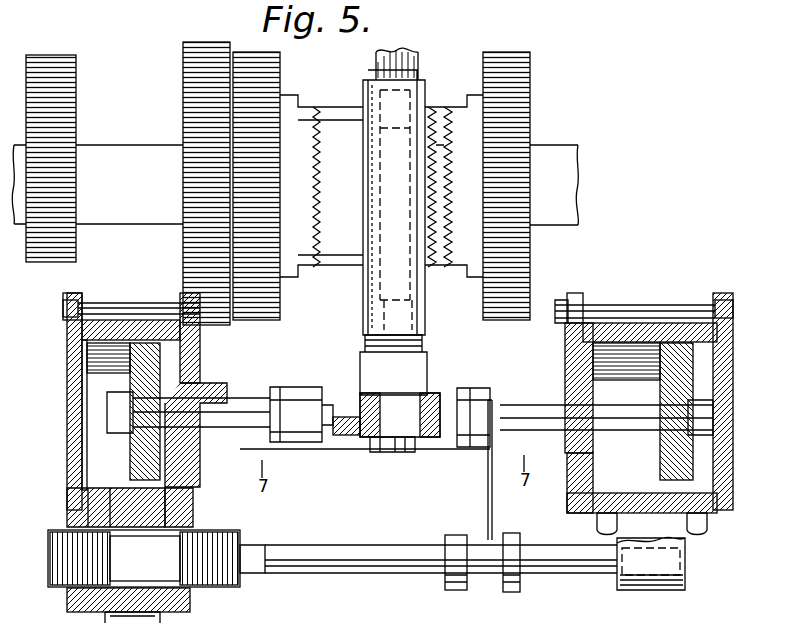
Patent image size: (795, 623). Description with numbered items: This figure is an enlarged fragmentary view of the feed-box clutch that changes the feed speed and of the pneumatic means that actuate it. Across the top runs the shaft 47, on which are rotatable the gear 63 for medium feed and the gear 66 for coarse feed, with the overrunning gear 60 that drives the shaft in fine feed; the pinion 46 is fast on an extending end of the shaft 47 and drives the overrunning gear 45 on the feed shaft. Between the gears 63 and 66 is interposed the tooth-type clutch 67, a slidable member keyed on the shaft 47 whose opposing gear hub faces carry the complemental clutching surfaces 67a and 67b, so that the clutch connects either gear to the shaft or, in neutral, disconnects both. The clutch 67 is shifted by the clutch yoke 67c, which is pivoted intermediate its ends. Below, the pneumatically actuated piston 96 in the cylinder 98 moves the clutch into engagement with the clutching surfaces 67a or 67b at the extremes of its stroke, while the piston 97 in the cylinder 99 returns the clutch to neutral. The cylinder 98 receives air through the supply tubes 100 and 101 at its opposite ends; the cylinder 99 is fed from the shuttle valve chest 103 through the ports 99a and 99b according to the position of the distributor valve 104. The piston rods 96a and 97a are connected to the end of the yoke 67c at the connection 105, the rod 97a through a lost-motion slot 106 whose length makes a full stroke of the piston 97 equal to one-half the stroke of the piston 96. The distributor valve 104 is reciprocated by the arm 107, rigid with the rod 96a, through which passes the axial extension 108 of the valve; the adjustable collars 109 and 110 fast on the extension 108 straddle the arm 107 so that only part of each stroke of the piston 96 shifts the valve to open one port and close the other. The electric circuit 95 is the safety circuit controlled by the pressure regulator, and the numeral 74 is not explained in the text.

The overrunning gear 45 is at (77, 75).
The pinion 46 is at (76, 140).
The shaft 47 is at (564, 150).
The overrunning gear 60 is at (183, 97).
The gear 63 is at (525, 101).
The gear 66 is at (281, 76).
The clutch 67 is at (347, 260).
The clutching surface 67a is at (447, 107).
The clutching surface 67b is at (316, 107).
The clutch yoke 67c is at (373, 170).
The base 74 is at (198, 614).
The electric circuit 95 is at (410, 56).
The piston 96 is at (680, 388).
The piston rod 96a is at (625, 416).
The piston 97 is at (130, 388).
The piston rod 97a is at (262, 445).
The cylinder 98 is at (642, 483).
The cylinder 99 is at (145, 401).
The port 99a is at (175, 514).
The port 99b is at (68, 515).
The air supply tube 100 is at (700, 530).
The air supply tube 101 is at (600, 522).
The shuttle valve chest 103 is at (190, 598).
The distributor valve 104 is at (156, 558).
The connection 105 is at (390, 452).
The slot 106 is at (365, 440).
The arm 107 is at (489, 484).
The axial extension 108 is at (330, 548).
The abutment 109 is at (512, 536).
The abutment 110 is at (446, 540).